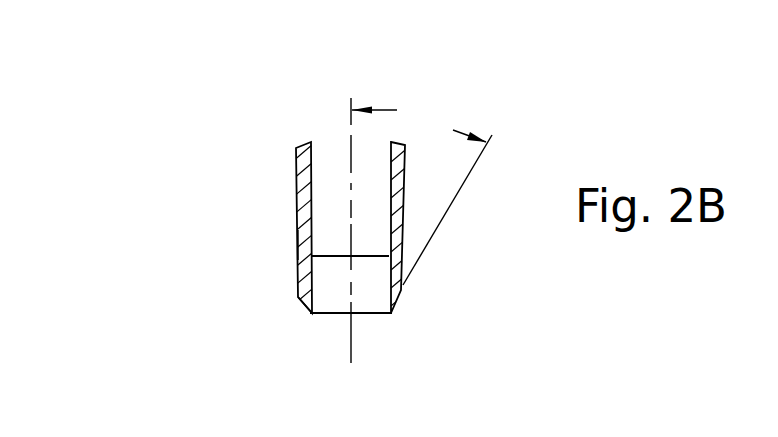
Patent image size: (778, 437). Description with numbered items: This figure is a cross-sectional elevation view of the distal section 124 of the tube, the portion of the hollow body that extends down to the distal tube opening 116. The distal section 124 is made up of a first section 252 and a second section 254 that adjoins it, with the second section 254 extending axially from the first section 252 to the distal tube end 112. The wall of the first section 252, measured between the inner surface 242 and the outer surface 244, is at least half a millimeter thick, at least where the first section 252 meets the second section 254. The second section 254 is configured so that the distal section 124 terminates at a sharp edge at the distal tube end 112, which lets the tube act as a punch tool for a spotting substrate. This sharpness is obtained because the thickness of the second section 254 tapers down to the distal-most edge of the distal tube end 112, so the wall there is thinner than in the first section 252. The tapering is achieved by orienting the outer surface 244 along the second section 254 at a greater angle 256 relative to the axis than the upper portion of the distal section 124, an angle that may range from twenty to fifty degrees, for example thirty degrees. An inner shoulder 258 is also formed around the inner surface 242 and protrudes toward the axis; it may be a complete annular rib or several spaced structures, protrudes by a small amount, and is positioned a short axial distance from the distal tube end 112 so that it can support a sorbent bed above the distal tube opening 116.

The distal section 124 is at (128, 183).
The inner surface 242 is at (313, 167).
The outer surface 244 is at (296, 171).
The first section 252 is at (298, 243).
The second section 254 is at (303, 297).
The angle of wall relative to axis 256 is at (385, 110).
The inner shoulder 258 is at (372, 258).
The distal tube opening 116 is at (317, 315).
The distal tube end 112 is at (362, 317).